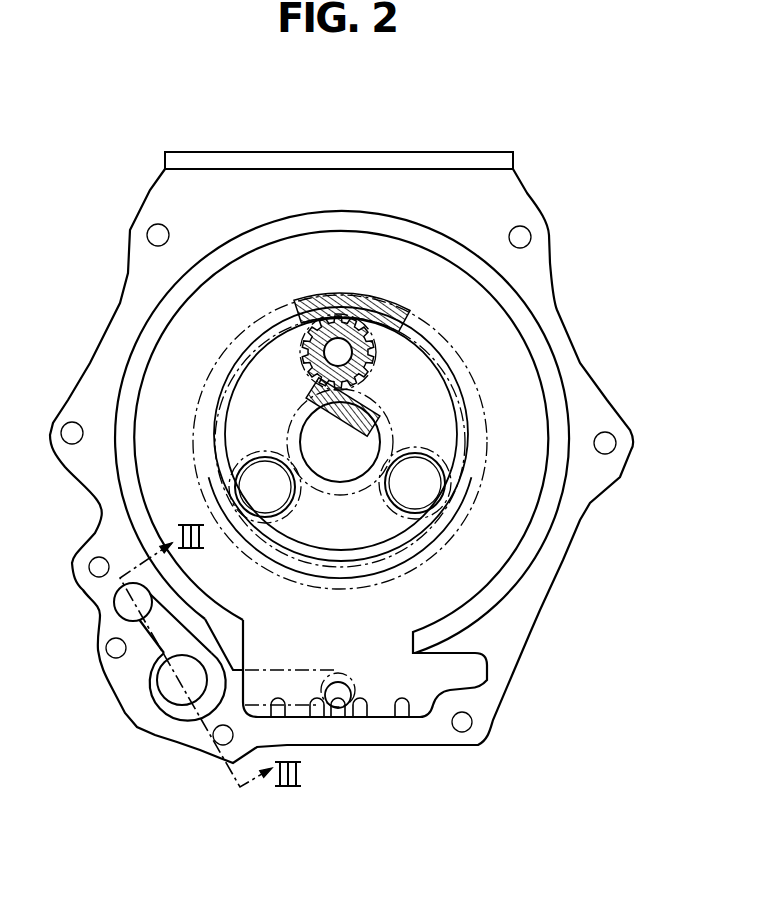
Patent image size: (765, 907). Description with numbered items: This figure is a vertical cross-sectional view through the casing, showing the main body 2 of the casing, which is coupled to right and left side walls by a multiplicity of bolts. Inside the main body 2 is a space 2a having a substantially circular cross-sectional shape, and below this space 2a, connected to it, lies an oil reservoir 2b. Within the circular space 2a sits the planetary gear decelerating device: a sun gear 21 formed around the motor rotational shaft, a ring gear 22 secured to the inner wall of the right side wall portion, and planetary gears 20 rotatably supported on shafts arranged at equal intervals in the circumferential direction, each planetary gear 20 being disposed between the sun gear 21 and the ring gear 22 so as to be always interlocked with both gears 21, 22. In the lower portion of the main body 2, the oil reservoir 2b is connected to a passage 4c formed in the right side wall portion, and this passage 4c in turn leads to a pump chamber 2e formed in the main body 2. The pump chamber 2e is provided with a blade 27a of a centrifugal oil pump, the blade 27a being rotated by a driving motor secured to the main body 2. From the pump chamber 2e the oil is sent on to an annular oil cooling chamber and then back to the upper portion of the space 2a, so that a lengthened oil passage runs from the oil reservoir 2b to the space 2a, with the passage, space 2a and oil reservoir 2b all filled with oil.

The main body 2 is at (551, 258).
The space 2a is at (508, 532).
The oil reservoir 2b is at (373, 697).
The pump chamber 2e is at (177, 717).
The passage 4c is at (338, 710).
The planetary gears 20 is at (422, 455).
The sun gear 21 is at (300, 400).
The ring gear 22 is at (305, 305).
The blade 27a is at (155, 697).